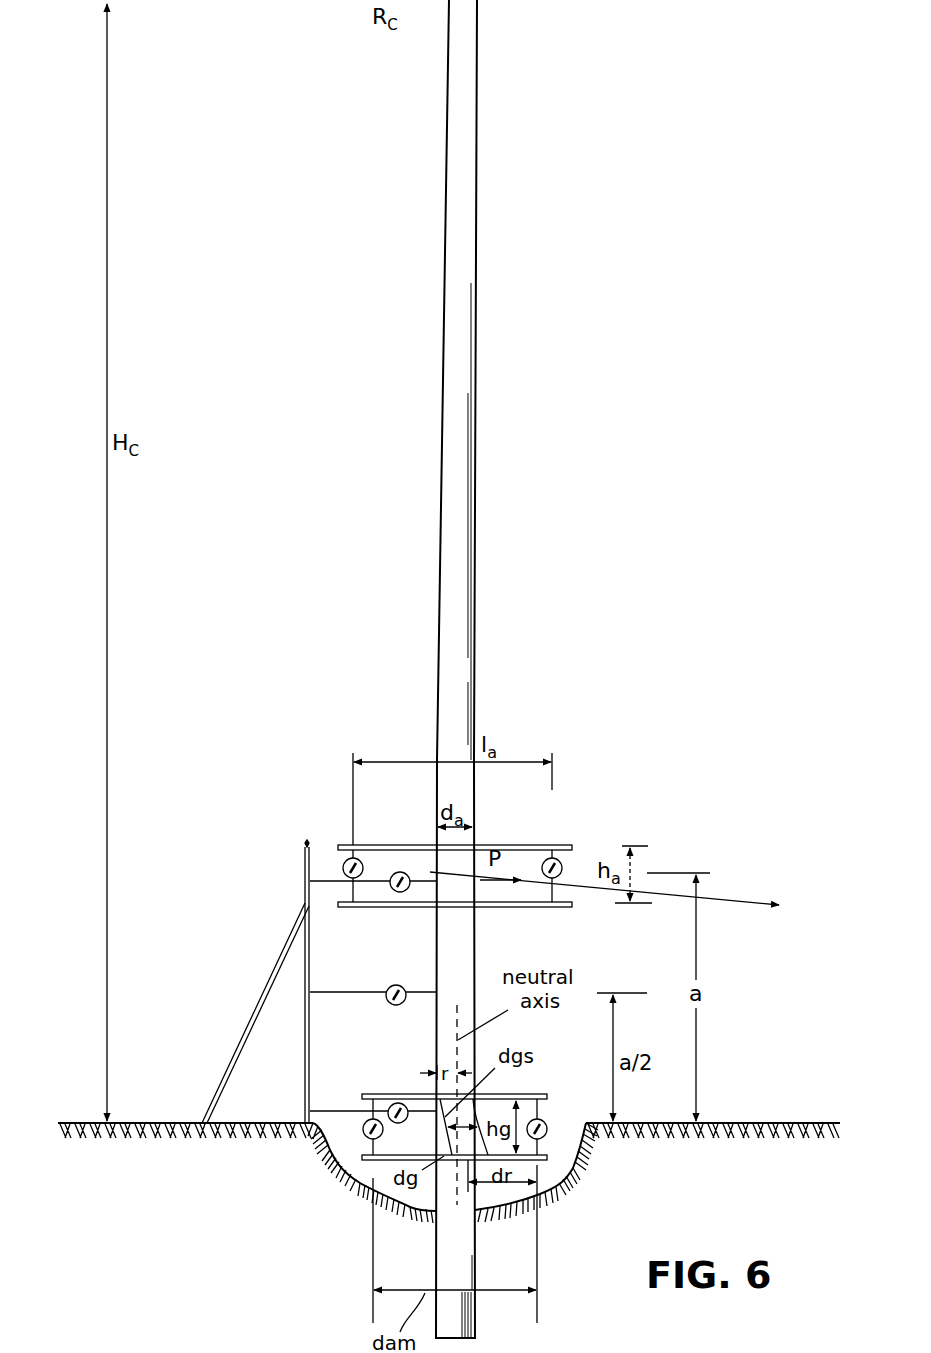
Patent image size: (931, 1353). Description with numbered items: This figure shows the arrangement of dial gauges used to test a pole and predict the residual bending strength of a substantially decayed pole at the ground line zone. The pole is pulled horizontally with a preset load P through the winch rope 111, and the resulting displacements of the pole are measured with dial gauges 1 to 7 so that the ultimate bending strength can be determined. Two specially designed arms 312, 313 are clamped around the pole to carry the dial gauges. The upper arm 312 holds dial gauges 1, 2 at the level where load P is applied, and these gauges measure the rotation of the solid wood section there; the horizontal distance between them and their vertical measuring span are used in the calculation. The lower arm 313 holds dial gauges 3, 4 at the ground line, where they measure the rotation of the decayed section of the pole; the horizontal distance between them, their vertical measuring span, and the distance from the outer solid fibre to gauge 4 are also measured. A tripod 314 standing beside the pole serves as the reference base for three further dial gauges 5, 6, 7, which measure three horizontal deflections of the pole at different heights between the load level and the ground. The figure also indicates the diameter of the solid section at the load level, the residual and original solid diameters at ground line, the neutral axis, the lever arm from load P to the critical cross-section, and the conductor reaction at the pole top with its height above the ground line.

The dial gauge 1 is at (342, 860).
The dial gauge 2 is at (563, 866).
The dial gauge 3 is at (362, 1129).
The dial gauge 4 is at (548, 1126).
The dial gauge 5 is at (392, 875).
The dial gauge 6 is at (388, 987).
The dial gauge 7 is at (404, 1122).
The winch rope 111 is at (630, 895).
The arm 312 is at (505, 845).
The arm 313 is at (503, 1095).
The tripod 314 is at (273, 968).